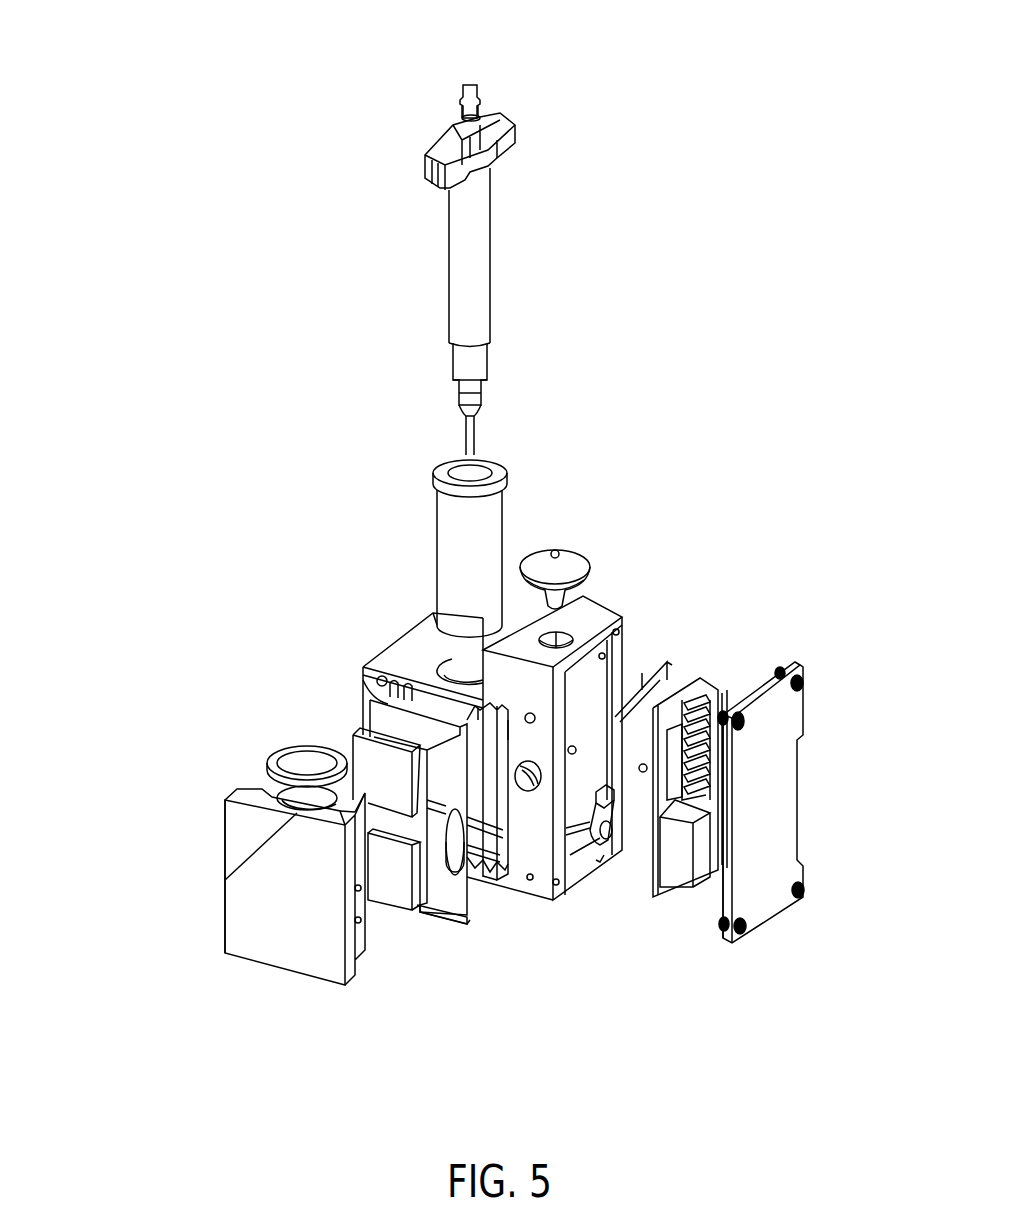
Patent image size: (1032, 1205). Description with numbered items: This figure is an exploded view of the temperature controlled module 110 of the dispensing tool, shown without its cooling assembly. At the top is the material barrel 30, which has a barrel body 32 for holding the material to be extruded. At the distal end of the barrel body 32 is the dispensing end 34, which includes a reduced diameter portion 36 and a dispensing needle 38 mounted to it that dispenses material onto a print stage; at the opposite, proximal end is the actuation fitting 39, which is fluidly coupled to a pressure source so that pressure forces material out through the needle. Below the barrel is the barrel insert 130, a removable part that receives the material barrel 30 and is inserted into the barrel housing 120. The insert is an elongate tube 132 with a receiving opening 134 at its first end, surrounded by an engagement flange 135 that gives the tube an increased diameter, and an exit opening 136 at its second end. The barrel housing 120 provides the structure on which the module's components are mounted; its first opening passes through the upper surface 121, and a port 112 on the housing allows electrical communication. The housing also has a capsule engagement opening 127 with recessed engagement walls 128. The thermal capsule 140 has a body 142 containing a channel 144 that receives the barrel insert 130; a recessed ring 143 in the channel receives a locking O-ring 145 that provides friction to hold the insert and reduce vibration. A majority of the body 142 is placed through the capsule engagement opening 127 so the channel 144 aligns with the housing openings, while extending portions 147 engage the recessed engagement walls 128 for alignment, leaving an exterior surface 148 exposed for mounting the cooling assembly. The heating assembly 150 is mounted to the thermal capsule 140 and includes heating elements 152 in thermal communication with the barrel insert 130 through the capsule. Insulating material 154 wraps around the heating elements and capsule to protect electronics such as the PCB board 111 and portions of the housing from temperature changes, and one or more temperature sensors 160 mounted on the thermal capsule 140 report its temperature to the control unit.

The material barrel 30 is at (646, 180).
The barrel body 32 is at (492, 198).
The dispensing end 34 is at (522, 381).
The reduced diameter portion 36 is at (460, 398).
The dispensing needle 38 is at (478, 438).
The actuation fitting 39 is at (417, 112).
The temperature controlled module 110 is at (288, 296).
The PCB board 111 is at (718, 690).
The port 112 is at (592, 562).
The barrel housing 120 is at (757, 482).
The upper surface 121 is at (378, 650).
The capsule engagement opening 127 is at (507, 884).
The recessed engagement walls 128 is at (505, 820).
The barrel insert 130 is at (378, 496).
The elongate tube 132 is at (505, 517).
The receiving opening 134 is at (452, 462).
The engagement flange 135 is at (520, 462).
The exit opening 136 is at (432, 618).
The thermal capsule 140 is at (192, 751).
The body 142 is at (225, 846).
The recessed ring 143 is at (225, 880).
The channel 144 is at (280, 790).
The locking O-ring 145 is at (285, 752).
The extending portions 147 is at (225, 816).
The exterior surface 148 is at (298, 915).
The heating assembly 150 is at (493, 988).
The heating elements 152 is at (410, 892).
The insulating material 154 is at (365, 712).
The temperature sensors 160 is at (600, 853).